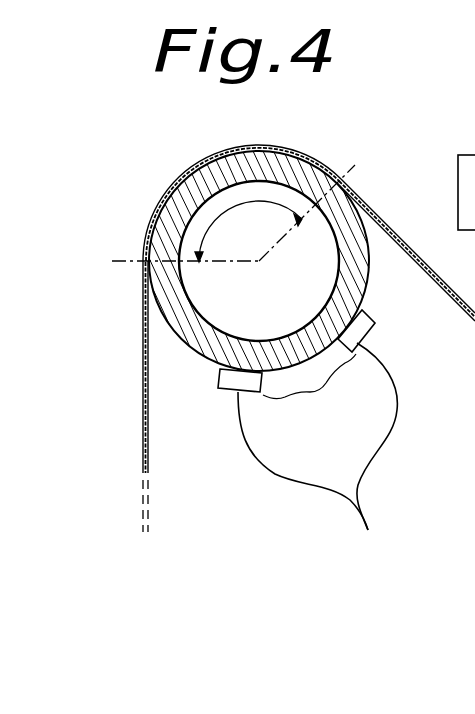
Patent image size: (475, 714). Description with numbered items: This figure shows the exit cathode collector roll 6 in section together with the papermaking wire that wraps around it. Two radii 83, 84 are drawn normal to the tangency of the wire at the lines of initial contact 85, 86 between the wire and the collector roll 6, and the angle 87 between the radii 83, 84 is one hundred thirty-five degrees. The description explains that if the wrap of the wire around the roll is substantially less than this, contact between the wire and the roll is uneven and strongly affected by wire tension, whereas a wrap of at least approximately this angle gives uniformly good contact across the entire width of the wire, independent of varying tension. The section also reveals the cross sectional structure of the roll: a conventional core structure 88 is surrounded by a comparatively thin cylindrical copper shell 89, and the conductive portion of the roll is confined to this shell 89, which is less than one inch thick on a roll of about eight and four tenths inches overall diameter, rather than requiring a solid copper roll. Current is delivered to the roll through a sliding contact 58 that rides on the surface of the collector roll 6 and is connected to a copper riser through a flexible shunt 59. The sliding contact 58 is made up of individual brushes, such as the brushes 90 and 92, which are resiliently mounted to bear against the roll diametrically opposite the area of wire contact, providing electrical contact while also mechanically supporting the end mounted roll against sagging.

The exit cathode collector roll 6 is at (174, 334).
The sliding contact 58 is at (316, 398).
The flexible shunt 59 is at (250, 445).
The radius 83 is at (230, 263).
The radius 84 is at (277, 243).
The line of initial contact 85 is at (143, 263).
The line of initial contact 86 is at (339, 182).
The angle 87 is at (240, 150).
The core structure 88 is at (205, 212).
The copper shell 89 is at (168, 297).
The brush 90 is at (220, 378).
The brush 92 is at (367, 316).